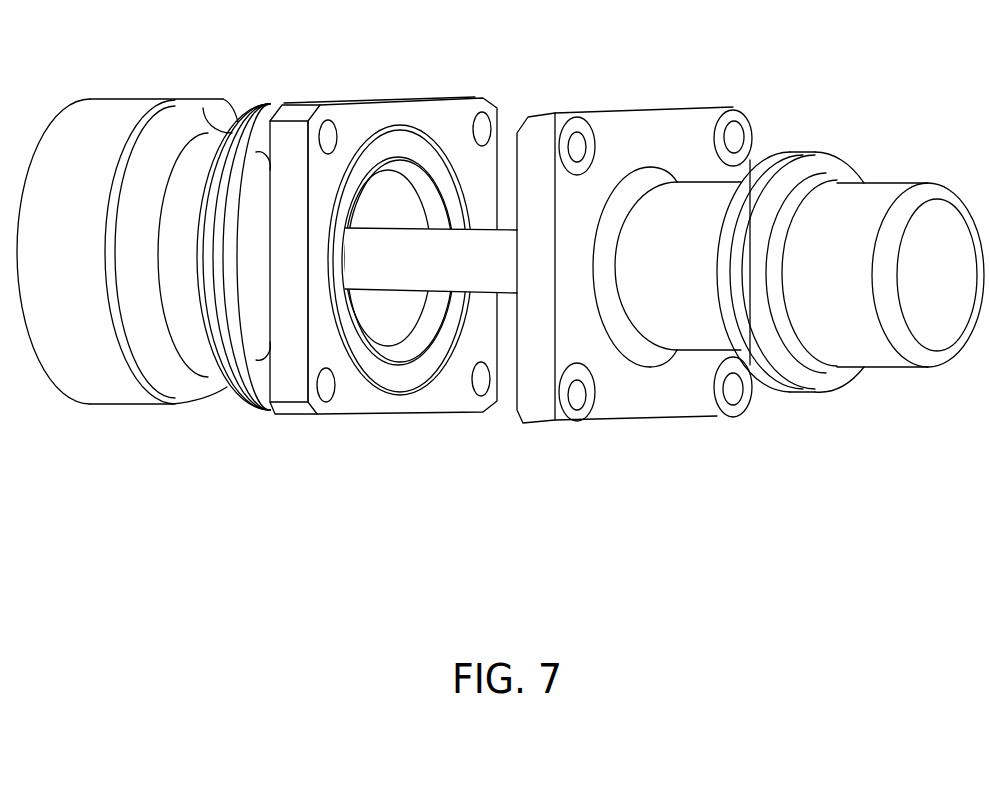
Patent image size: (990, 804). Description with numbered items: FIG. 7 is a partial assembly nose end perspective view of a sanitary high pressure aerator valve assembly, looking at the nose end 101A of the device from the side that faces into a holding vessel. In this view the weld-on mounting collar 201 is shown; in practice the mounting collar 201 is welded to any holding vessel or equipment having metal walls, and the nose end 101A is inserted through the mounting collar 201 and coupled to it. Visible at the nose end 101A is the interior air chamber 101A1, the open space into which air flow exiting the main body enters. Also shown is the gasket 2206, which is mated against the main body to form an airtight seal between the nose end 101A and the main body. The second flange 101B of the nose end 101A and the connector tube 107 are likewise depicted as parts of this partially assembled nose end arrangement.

The weld-on mounting collar 201 is at (138, 100).
The nose end 101A is at (367, 281).
The gasket 2206 is at (373, 348).
The interior air chamber 101A1 is at (403, 311).
The second flange 101B is at (663, 110).
The connector tube 107 is at (893, 183).